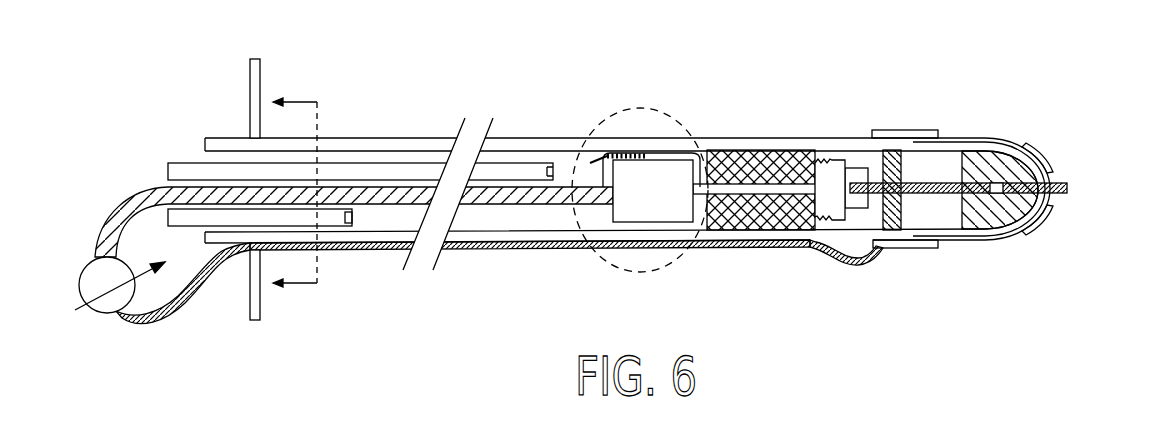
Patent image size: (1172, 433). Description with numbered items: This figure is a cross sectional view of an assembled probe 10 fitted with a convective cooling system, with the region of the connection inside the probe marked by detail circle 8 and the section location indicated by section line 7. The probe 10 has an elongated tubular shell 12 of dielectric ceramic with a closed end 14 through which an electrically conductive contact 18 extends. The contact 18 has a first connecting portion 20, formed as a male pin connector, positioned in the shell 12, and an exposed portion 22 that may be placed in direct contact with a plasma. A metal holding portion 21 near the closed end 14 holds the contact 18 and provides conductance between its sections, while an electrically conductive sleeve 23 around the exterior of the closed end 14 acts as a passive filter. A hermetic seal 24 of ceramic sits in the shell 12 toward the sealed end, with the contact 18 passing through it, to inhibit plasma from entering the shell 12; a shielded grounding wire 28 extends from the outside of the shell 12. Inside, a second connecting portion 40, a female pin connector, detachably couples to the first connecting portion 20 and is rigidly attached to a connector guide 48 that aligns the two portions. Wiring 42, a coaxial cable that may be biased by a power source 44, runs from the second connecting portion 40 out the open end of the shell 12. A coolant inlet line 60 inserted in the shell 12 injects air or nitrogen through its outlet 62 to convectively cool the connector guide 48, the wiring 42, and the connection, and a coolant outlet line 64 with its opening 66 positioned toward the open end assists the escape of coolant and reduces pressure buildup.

The section line 7- 7 is at (283, 189).
The detail region 8 is at (660, 108).
The probe 10 is at (425, 79).
The elongated tubular shell 12 is at (381, 138).
The closed end 14 is at (1053, 200).
The electrically conductive contact 18 is at (949, 180).
The first connecting portion 20 is at (857, 168).
The holding portion 21 is at (1006, 162).
The exposed portion 22 is at (1068, 188).
The electrically conductive sleeve 23 is at (1042, 223).
The hermetic seal 24 is at (892, 160).
The electrically shielded grounding wire 28 is at (768, 249).
The second connecting portion 40 is at (837, 158).
The wiring 42 is at (550, 206).
The power source 44 is at (102, 313).
The connector guide 48 is at (753, 160).
The coolant inlet line 60 is at (520, 163).
The outlet 62 is at (556, 172).
The coolant outlet line 64 is at (337, 226).
The opening 66 is at (355, 226).